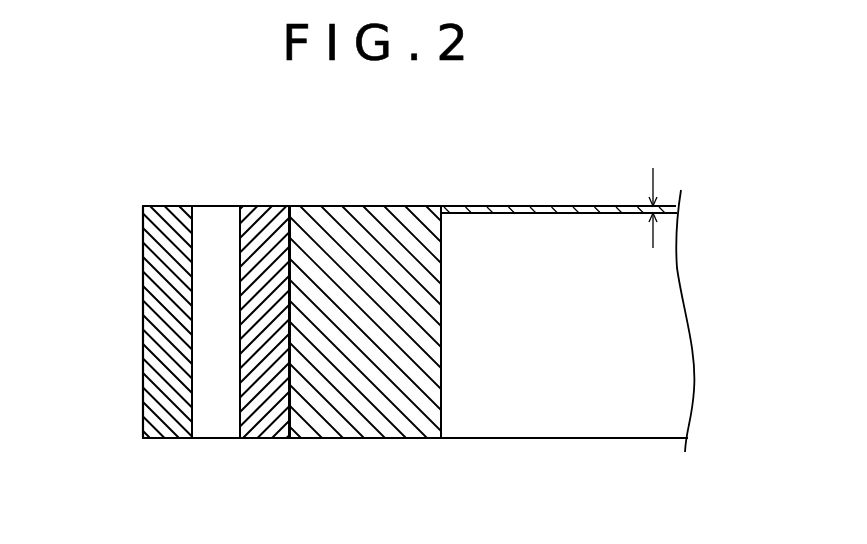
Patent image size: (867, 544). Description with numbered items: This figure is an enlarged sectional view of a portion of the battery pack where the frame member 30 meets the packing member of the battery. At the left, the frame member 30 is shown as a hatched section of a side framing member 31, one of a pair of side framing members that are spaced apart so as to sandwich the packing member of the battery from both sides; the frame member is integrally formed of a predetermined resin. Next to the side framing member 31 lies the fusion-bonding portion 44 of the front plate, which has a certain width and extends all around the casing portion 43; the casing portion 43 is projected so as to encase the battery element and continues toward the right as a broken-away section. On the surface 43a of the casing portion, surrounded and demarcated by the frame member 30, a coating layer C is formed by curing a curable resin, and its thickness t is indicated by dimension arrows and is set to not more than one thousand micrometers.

The frame member 30 is at (376, 312).
The side framing member 31 is at (143, 317).
The casing portion 43 is at (549, 281).
The surface of casing portion 43a is at (518, 206).
The fusion-bonding portion 44 is at (362, 438).
The coating layer C is at (578, 206).
The thickness of coating layer t is at (659, 205).